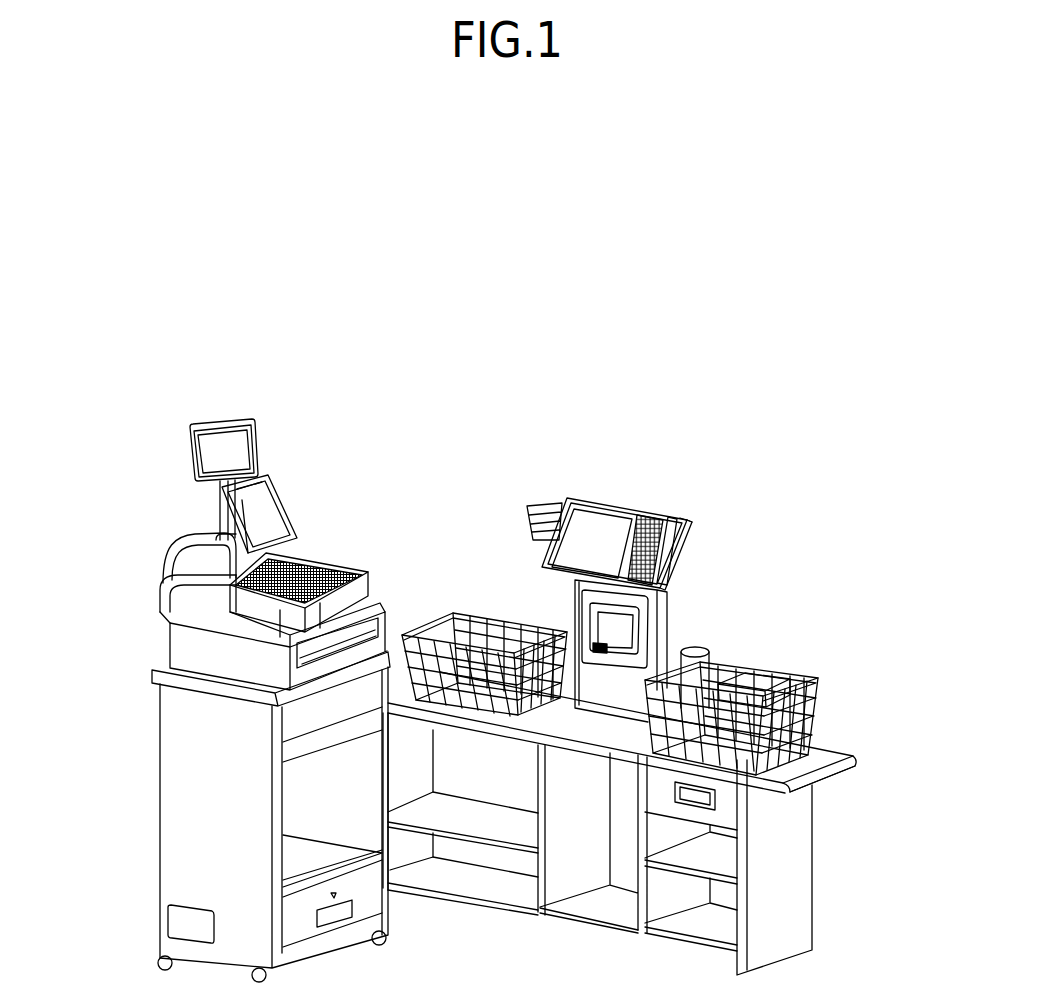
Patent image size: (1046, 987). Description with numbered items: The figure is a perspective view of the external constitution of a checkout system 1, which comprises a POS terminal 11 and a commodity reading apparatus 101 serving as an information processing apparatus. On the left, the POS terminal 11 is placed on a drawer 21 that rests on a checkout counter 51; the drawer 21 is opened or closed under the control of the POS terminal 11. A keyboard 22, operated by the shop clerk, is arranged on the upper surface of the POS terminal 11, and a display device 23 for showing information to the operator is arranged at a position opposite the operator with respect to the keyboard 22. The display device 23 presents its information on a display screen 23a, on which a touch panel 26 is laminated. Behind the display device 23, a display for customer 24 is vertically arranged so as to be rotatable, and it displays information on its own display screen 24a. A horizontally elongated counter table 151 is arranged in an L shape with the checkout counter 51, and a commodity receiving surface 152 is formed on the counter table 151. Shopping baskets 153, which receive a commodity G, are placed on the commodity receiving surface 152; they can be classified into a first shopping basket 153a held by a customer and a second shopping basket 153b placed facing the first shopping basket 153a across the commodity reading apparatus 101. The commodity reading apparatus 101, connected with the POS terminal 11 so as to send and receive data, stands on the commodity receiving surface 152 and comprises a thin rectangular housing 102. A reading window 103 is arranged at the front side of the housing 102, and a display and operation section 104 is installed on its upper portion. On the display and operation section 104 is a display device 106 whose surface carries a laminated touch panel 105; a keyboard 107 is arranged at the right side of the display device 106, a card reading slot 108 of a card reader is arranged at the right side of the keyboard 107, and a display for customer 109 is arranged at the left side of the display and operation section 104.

The checkout system 1 is at (121, 448).
The POS terminal 11 is at (143, 563).
The drawer 21 is at (178, 647).
The keyboard 22 is at (345, 562).
The display device 23 is at (280, 480).
The display screen 23a is at (297, 503).
The display for customer 24 is at (220, 421).
The display screen 24a is at (210, 430).
The touch panel 26 is at (224, 512).
The checkout counter 51 is at (180, 807).
The commodity reading apparatus 101 is at (536, 403).
The housing 102 is at (597, 702).
The reading window 103 is at (600, 627).
The display and operation section 104 is at (582, 497).
The touch panel 105 is at (608, 512).
The display device 106 is at (633, 513).
The keyboard 107 is at (673, 517).
The card reading slot 108 is at (682, 515).
The display for customer 109 is at (530, 498).
The counter table 151 is at (797, 892).
The commodity receiving surface 152 is at (833, 750).
The shopping basket 153 is at (816, 664).
The first shopping basket 153a is at (820, 690).
The second shopping basket 153b is at (435, 613).
The commodity G is at (697, 652).